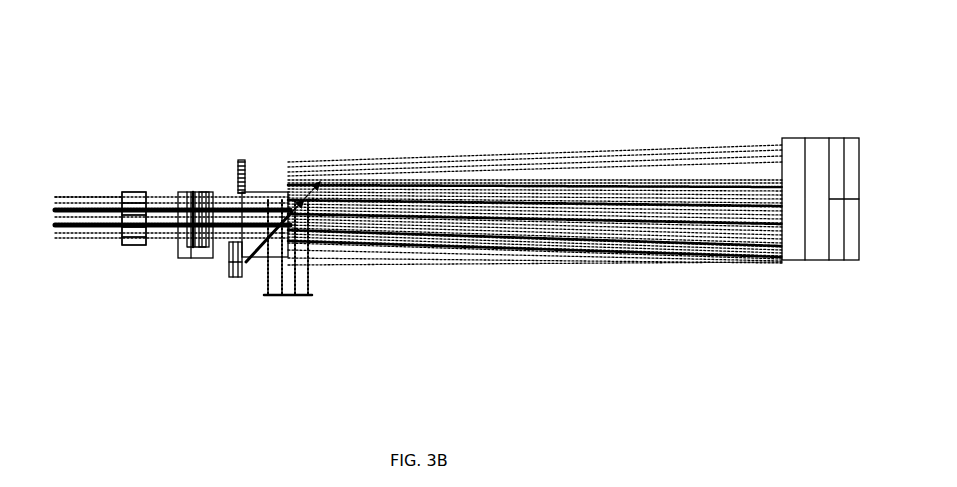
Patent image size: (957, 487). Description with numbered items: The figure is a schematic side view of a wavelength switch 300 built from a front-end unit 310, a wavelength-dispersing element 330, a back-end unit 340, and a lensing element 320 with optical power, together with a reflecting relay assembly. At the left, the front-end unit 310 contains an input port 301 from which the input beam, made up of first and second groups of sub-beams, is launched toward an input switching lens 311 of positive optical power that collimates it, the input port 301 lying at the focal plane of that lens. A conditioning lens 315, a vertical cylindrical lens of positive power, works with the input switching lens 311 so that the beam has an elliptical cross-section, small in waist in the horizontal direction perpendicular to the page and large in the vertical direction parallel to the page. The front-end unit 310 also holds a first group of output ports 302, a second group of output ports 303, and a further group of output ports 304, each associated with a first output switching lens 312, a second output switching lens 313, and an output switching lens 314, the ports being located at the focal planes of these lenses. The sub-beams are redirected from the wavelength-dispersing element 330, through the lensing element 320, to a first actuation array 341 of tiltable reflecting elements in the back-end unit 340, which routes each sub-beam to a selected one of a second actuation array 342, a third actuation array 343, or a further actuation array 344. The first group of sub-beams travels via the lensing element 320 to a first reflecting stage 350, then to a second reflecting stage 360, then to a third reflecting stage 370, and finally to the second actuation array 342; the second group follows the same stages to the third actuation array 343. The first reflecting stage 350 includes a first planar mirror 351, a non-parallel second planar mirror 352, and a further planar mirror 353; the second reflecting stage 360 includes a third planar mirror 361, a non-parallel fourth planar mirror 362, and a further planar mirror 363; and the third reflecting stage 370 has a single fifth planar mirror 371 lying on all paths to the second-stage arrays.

The wavelength switch 300 is at (96, 57).
The input port 301 is at (58, 230).
The first group of output ports 302 is at (61, 236).
The second group of output ports 303 is at (57, 209).
The group of output ports 304 is at (52, 195).
The front-end unit 310 is at (97, 137).
The input switching lens 311 is at (127, 248).
The first output switching lens 312 is at (122, 240).
The second output switching lens 313 is at (122, 205).
The output switching lens 314 is at (127, 192).
The conditioning lens 315 is at (178, 253).
The lensing element 320 is at (822, 138).
The wavelength-dispersing element 330 is at (178, 256).
The back-end unit 340 is at (289, 373).
The first actuation array 341 is at (308, 298).
The second actuation array 342 is at (295, 298).
The third actuation array 343 is at (282, 298).
The actuation array 344 is at (267, 298).
The first reflecting stage 350 is at (212, 128).
The first planar mirror 351 is at (241, 160).
The second planar mirror 352 is at (238, 165).
The planar mirror 353 is at (238, 178).
The second reflecting stage 360 is at (158, 297).
The third planar mirror 361 is at (236, 277).
The fourth planar mirror 362 is at (230, 264).
The planar mirror 363 is at (229, 250).
The third reflecting stage 370 is at (176, 184).
The fifth planar mirror 371 is at (238, 190).